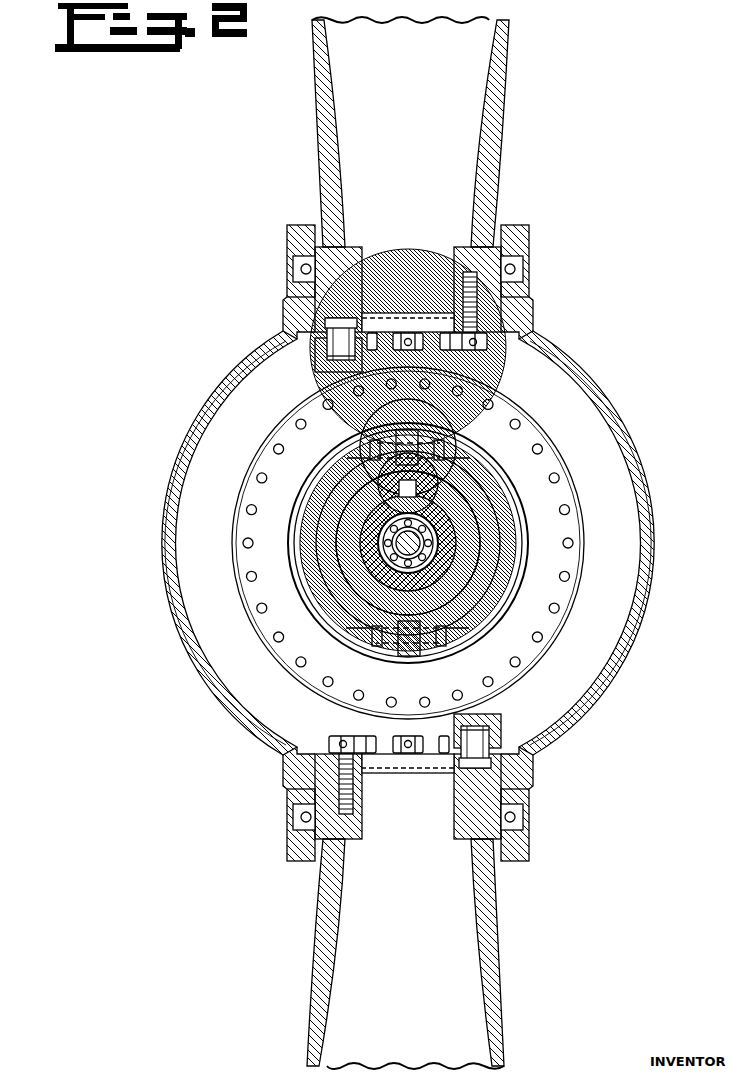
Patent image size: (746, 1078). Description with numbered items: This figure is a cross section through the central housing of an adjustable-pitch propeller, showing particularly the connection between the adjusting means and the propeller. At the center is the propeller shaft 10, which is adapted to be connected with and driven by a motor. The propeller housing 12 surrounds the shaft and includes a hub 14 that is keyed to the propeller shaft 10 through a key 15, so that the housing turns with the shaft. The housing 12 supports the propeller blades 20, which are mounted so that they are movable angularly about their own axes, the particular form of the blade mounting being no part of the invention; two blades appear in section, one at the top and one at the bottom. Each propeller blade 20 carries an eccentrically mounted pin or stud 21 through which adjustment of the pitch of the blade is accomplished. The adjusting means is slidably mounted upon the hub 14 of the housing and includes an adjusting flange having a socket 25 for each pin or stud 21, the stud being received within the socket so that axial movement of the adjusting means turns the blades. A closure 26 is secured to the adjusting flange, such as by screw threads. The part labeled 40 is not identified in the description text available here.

The propeller shaft 10 is at (447, 545).
The propeller housing 12 is at (652, 539).
The hub 14 is at (345, 540).
The key 15 is at (396, 489).
The propeller blades 20 is at (462, 152).
The pin or stud 21 is at (330, 348).
The socket 25 is at (325, 360).
The closure 26 is at (556, 497).
The shaft 40 is at (418, 538).